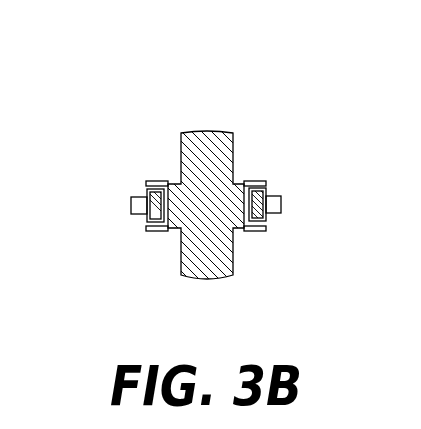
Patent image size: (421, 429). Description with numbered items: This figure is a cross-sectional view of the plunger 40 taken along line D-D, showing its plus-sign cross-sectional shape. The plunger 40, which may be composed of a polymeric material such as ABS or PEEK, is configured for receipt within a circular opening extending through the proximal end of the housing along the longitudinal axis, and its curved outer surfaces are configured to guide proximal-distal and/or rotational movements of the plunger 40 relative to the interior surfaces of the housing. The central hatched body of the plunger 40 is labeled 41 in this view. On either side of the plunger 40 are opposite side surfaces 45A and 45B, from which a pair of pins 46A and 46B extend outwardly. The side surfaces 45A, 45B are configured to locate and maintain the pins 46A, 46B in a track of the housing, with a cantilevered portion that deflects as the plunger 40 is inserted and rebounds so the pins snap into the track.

The plunger 40 is at (136, 101).
The drive shaft 41 is at (200, 129).
The side surface 45A is at (150, 182).
The side surface 45B is at (262, 182).
The pin 46A is at (130, 203).
The pin 46B is at (281, 202).